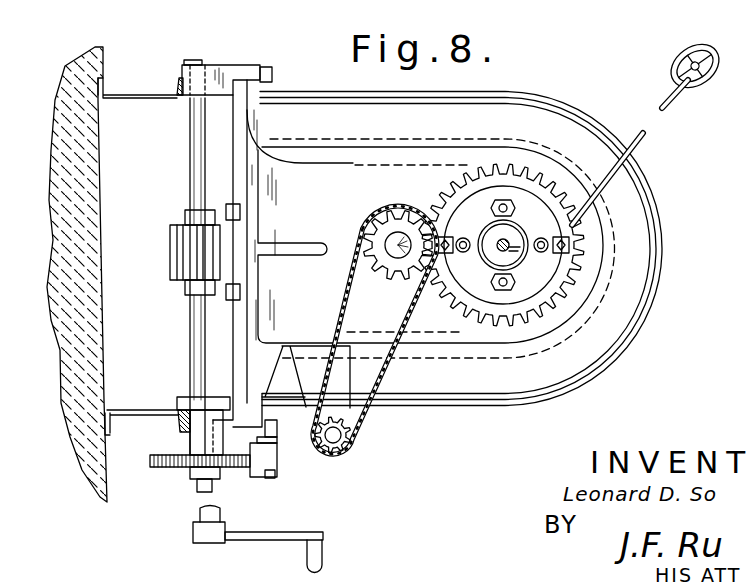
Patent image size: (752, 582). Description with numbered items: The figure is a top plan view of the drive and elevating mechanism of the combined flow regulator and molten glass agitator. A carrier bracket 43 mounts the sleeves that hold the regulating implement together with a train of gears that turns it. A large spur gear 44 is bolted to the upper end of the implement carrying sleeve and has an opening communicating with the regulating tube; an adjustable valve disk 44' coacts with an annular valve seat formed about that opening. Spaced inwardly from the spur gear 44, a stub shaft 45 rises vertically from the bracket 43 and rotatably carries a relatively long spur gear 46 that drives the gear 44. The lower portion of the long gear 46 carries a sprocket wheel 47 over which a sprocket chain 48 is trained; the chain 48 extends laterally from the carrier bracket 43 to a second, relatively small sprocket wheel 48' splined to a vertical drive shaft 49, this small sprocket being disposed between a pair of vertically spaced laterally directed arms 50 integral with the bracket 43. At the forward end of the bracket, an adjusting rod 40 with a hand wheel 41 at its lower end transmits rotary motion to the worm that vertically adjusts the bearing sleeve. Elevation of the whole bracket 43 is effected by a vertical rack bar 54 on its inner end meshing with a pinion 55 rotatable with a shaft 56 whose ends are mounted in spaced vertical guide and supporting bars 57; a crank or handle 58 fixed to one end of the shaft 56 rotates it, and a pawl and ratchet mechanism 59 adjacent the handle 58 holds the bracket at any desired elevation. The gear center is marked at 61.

The adjusting rod 40 is at (645, 141).
The hand wheel 41 is at (708, 88).
The carrier bracket 43 is at (404, 131).
The spur gear 44 is at (515, 245).
The adjustable valve disk 44' is at (499, 245).
The stub shaft 45 is at (571, 241).
The long spur gear 46 is at (410, 208).
The sprocket wheel 47 is at (394, 288).
The sprocket chain 48 is at (369, 330).
The small sprocket wheel 48' is at (355, 441).
The vertical drive shaft 49 is at (332, 438).
The laterally directed arms 50 is at (352, 378).
The vertical rack bar 54 is at (232, 239).
The pinion 55 is at (173, 244).
The shaft 56 is at (194, 334).
The vertical guide and supporting bars 57 is at (212, 64).
The crank or handle 58 is at (257, 541).
The pawl and ratchet mechanism 59 is at (250, 467).
The gear shaft center 61 is at (508, 256).